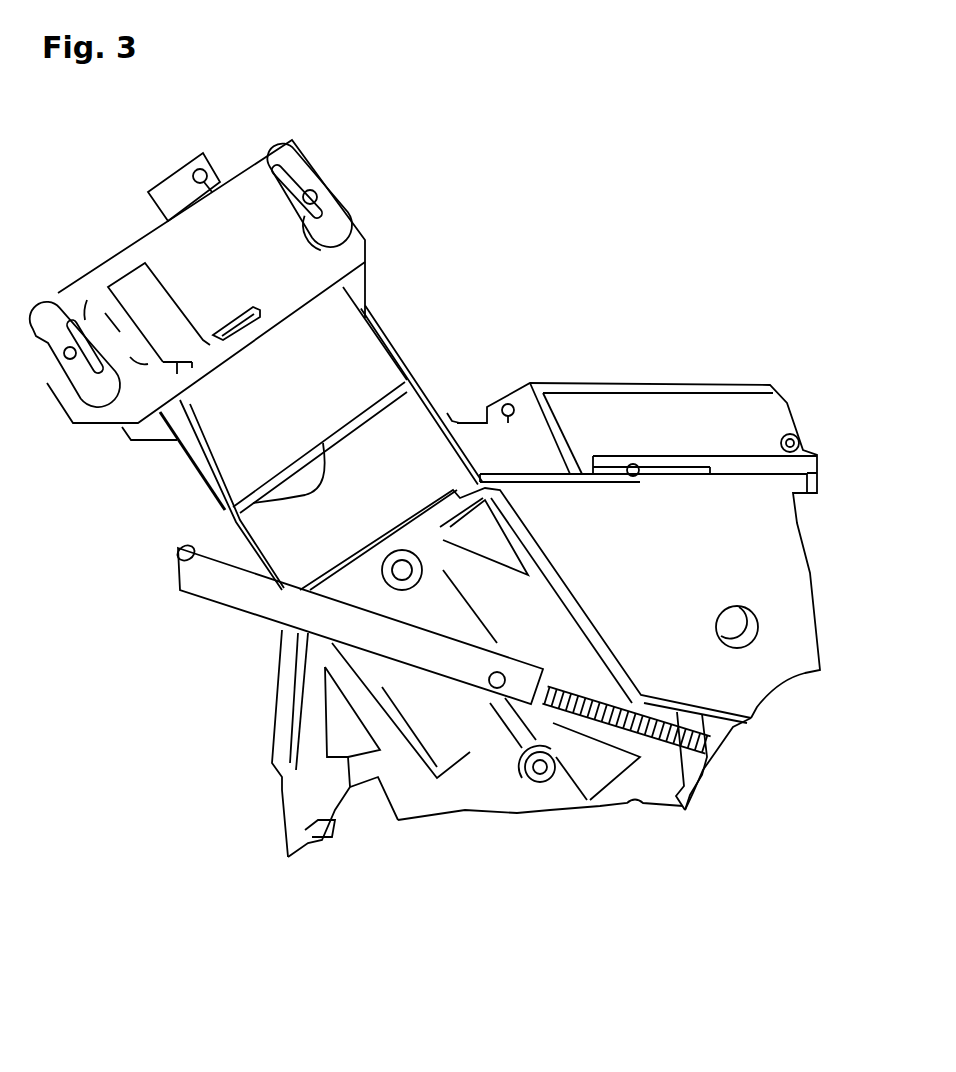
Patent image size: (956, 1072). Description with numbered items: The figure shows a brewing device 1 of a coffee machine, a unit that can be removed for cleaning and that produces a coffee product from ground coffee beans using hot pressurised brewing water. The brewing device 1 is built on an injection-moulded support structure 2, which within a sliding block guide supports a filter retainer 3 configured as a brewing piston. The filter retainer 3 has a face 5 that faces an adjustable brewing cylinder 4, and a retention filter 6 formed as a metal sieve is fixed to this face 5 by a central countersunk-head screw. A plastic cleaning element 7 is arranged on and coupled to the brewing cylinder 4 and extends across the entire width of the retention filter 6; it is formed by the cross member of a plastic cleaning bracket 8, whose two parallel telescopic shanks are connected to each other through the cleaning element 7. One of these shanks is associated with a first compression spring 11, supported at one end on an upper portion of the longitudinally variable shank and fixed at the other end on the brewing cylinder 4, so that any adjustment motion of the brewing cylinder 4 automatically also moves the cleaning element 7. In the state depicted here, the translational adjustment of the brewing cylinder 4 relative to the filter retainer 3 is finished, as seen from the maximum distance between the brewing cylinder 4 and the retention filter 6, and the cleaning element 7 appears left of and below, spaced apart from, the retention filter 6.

The brewing device 1 is at (586, 220).
The support structure 2 is at (330, 194).
The filter retainer 3 is at (330, 362).
The brewing cylinder 4 is at (527, 540).
The face 5 is at (362, 420).
The retention filter 6 is at (232, 506).
The cleaning element 7 is at (180, 556).
The cleaning bracket 8 is at (332, 625).
The first compression spring 11 is at (683, 808).